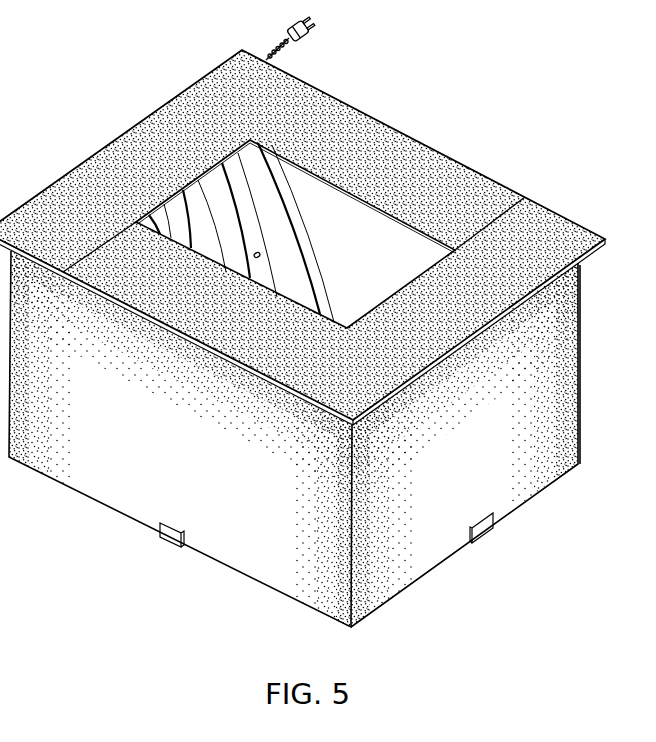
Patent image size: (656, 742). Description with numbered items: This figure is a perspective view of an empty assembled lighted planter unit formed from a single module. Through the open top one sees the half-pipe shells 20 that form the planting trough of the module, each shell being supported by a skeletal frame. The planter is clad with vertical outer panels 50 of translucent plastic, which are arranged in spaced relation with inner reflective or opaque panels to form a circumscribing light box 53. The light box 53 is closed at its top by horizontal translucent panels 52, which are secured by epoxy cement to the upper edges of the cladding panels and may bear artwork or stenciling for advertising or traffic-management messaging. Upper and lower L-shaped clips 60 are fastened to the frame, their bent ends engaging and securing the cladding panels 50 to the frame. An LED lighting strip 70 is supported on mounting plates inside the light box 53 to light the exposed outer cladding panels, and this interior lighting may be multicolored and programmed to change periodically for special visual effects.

The half-pipe shell 20 is at (288, 246).
The vertical outer panel 50 is at (97, 488).
The horizontal translucent panel 52 is at (127, 143).
The light box 53 is at (565, 362).
The L-shaped clip 60 is at (170, 538).
The LED lighting strip 70 is at (259, 253).